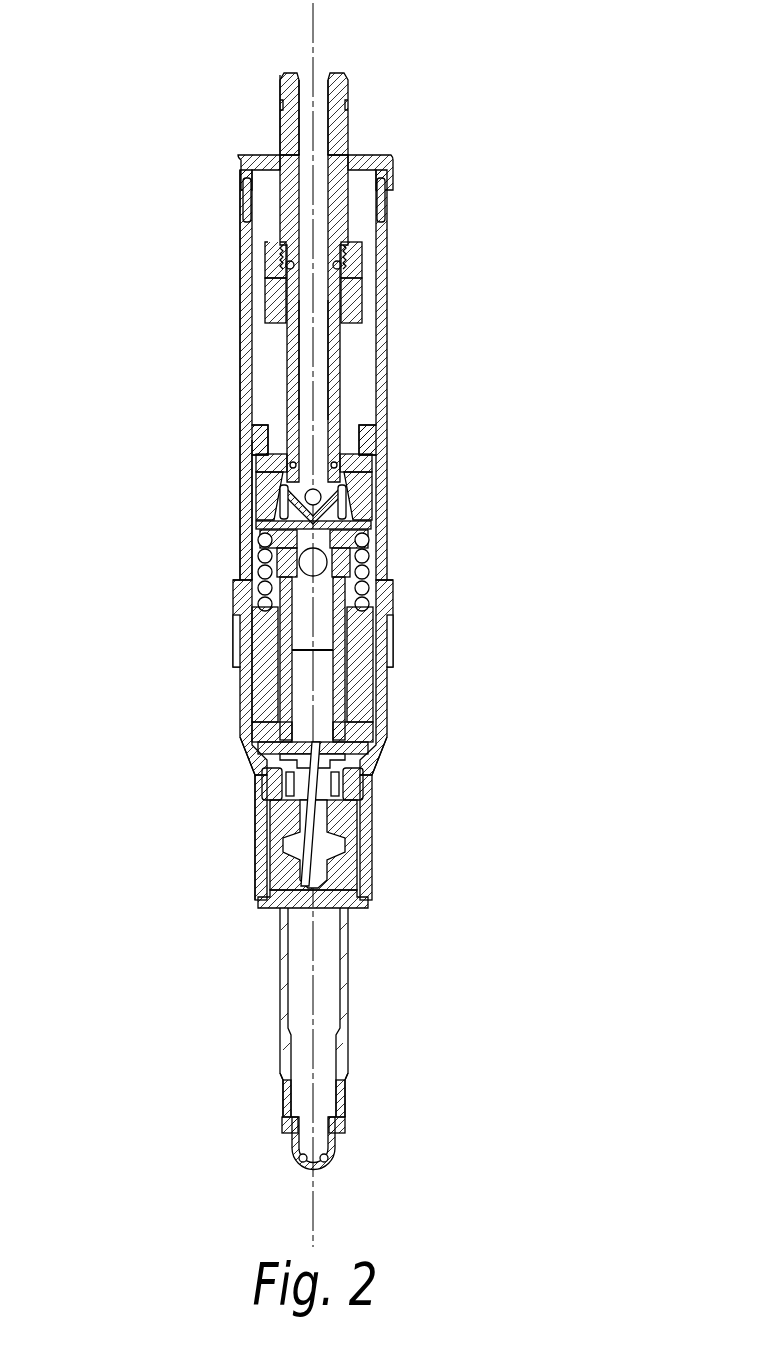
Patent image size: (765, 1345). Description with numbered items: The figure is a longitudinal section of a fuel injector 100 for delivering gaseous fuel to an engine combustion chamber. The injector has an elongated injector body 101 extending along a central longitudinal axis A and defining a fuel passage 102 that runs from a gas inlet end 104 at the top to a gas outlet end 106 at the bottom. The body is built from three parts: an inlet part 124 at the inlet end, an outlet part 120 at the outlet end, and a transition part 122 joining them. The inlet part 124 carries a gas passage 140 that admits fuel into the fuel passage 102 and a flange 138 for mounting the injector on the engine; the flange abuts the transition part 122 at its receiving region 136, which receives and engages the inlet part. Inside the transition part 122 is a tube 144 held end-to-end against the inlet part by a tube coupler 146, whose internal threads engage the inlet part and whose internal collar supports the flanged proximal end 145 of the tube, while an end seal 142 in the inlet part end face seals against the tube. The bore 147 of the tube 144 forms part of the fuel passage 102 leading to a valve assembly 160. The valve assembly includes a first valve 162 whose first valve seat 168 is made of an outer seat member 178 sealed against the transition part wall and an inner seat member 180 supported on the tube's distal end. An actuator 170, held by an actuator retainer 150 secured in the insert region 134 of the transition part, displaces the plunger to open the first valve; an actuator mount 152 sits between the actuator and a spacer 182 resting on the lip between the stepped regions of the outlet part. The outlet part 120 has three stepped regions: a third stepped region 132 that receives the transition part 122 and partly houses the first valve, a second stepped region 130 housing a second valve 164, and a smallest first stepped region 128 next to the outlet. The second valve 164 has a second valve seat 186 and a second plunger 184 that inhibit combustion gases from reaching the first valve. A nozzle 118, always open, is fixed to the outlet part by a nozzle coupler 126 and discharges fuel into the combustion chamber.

The fuel injector 100 is at (490, 120).
The central longitudinal axis A is at (312, 15).
The inlet part 124 is at (349, 72).
The gas inlet end 104 is at (281, 66).
The gas passage 140 is at (329, 145).
The flange 138 is at (240, 160).
The receiving region 136 is at (245, 196).
The transition part 122 is at (243, 264).
The injector body 101 is at (234, 291).
The end seal 142 is at (361, 232).
The flanged proximal end 145 is at (365, 268).
The tube coupler 146 is at (364, 302).
The tube 144 is at (286, 345).
The bore 147 is at (318, 365).
The inner seat member 180 is at (369, 437).
The first valve seat 168 is at (385, 476).
The outer seat member 178 is at (361, 490).
The first valve 162 is at (393, 556).
The actuator retainer 150 is at (385, 578).
The valve assembly 160 is at (197, 500).
The insert region 134 is at (232, 633).
The actuator 170 is at (254, 690).
The actuator mount 152 is at (336, 690).
The third stepped region 132 is at (389, 727).
The spacer 182 is at (258, 748).
The second valve 164 is at (233, 829).
The second valve seat 186 is at (266, 856).
The second plunger 184 is at (272, 893).
The second stepped region 130 is at (373, 850).
The first stepped region 128 is at (348, 963).
The fuel passage 102 is at (299, 973).
The outlet part 120 is at (278, 1010).
The gas outlet end 106 is at (346, 1108).
The nozzle coupler 126 is at (283, 1125).
The nozzle 118 is at (322, 1166).